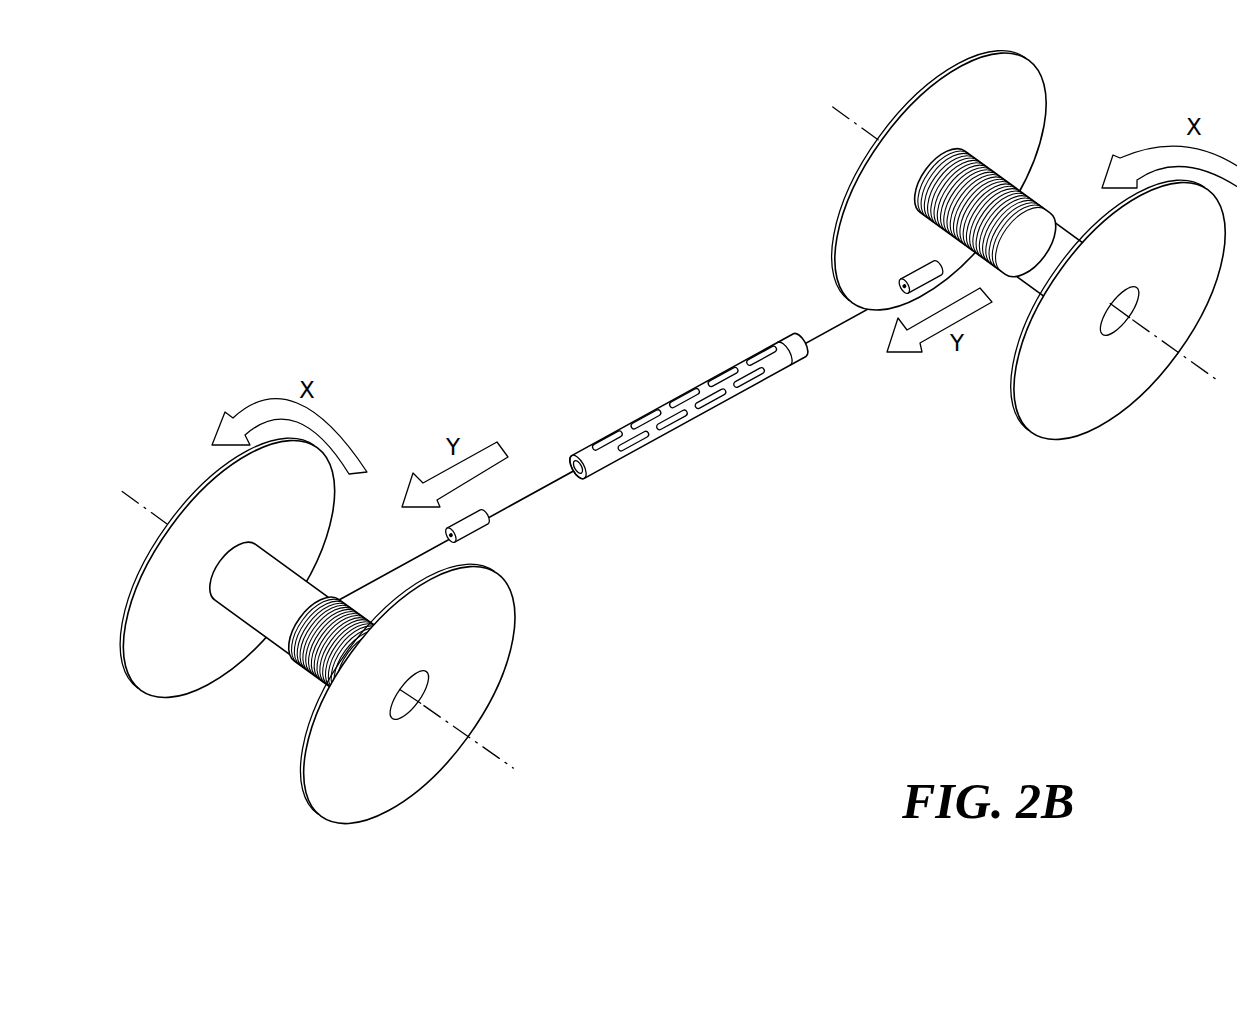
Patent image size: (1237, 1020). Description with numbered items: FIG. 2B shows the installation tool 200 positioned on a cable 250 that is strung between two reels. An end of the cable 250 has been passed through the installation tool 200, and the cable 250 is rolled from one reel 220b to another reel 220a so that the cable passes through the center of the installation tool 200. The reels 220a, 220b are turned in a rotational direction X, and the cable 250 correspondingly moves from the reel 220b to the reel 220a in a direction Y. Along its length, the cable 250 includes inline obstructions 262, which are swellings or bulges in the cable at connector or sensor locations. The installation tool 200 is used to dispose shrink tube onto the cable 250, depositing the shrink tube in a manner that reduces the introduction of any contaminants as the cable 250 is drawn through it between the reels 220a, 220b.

The installation tool 200 is at (674, 398).
The reel 220a is at (500, 622).
The reel 220b is at (887, 186).
The cable 250 is at (835, 330).
The inline obstructions 262 is at (478, 529).